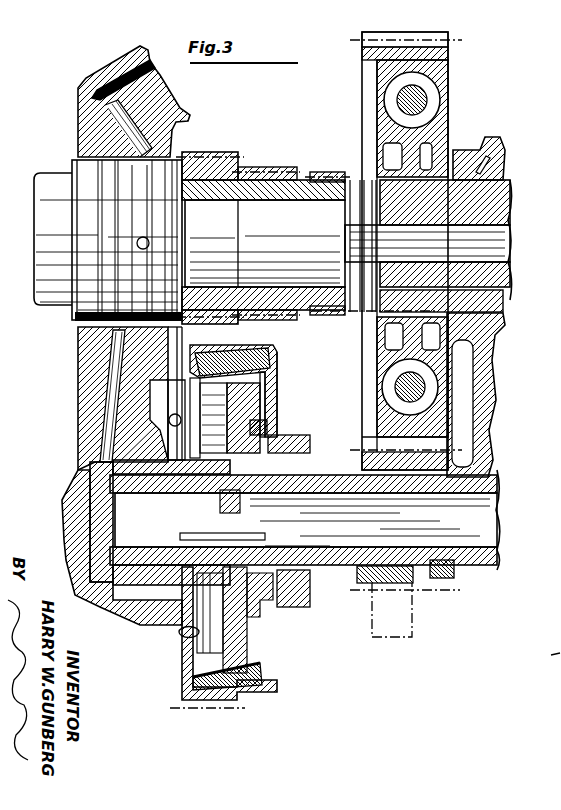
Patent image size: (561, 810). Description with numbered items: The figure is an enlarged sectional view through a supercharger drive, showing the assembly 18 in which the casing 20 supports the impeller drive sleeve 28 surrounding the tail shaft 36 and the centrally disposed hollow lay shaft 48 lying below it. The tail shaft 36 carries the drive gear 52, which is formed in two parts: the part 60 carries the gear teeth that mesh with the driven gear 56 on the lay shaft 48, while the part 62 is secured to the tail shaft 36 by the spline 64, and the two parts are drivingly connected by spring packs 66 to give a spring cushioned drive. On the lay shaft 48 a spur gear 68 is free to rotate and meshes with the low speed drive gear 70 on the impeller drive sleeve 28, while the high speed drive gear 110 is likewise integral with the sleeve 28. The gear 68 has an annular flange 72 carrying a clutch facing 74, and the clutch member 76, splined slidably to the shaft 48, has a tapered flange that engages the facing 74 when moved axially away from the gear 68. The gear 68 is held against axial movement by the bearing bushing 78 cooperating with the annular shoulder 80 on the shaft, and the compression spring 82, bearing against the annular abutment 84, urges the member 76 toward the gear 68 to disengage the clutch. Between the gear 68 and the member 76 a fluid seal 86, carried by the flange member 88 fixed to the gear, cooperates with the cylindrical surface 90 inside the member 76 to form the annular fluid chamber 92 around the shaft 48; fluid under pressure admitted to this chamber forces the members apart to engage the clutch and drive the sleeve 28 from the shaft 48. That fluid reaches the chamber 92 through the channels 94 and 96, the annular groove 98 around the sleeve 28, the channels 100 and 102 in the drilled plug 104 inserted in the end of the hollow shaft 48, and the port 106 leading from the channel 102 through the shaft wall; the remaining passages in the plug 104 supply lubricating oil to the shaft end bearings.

The transmission assembly 18 is at (546, 654).
The casing 20 is at (78, 118).
The impeller drive sleeve 28 is at (55, 172).
The tail shaft 36 is at (503, 222).
The lay shaft 48 is at (495, 490).
The drive gear 52 is at (453, 121).
The driven gear 56 is at (432, 598).
The gear part carrying teeth 60 is at (450, 58).
The gear part secured to shaft 62 is at (377, 128).
The spline 64 is at (514, 198).
The spring packs 66 is at (441, 100).
The spur gear 68 is at (86, 393).
The low speed drive gear 70 is at (196, 168).
The annular flange 72 is at (242, 352).
The clutch facing 74 is at (278, 358).
The clutch member 76 is at (258, 410).
The bearing bushing 78 is at (167, 420).
The annular shoulder 80 is at (179, 632).
The compression spring 82 is at (270, 438).
The annular abutment 84 is at (308, 456).
The fluid seal 86 is at (268, 380).
The flange member 88 is at (84, 412).
The cylindrical surface 90 is at (213, 422).
The annular fluid chamber 92 is at (232, 620).
The channel 94 is at (120, 72).
The channel 96 is at (92, 441).
The annular groove 98 is at (80, 351).
The channel 100 is at (120, 510).
The channel 102 is at (232, 513).
The drilled plug 104 is at (242, 543).
The port 106 is at (290, 547).
The high speed drive gear 110 is at (265, 166).